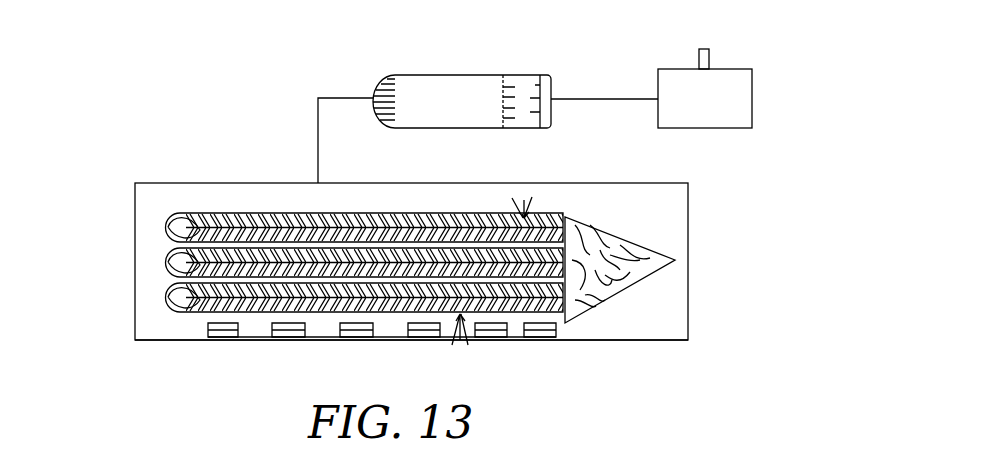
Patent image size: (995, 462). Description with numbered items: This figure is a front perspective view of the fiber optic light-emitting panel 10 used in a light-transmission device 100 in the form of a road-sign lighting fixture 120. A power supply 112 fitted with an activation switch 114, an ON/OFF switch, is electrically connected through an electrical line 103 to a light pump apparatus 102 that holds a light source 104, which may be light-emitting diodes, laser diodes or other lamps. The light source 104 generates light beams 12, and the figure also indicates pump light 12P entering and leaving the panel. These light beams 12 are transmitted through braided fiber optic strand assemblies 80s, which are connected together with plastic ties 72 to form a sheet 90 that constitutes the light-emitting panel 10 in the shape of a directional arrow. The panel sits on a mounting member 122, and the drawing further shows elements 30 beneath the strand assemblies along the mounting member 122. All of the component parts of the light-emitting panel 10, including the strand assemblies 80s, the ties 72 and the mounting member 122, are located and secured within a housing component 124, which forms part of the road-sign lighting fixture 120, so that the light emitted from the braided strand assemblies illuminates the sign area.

The fiber optic light-emitting panel 10 is at (103, 210).
The light beams 12 is at (510, 120).
The pump light 12P is at (392, 80).
The sensors 30 is at (259, 331).
The plastic ties 72 is at (195, 300).
The fiber optic strand assemblies 80s is at (183, 222).
The sheet 90 is at (358, 215).
The light-transmission device 100 is at (113, 331).
The light pump apparatus 102 is at (405, 74).
The electrical line 103 is at (576, 98).
The light source 104 is at (527, 94).
The power supply 112 is at (732, 128).
The activation switch 114 is at (710, 62).
The road-sign lighting fixture 120 is at (678, 221).
The mounting member 122 is at (391, 328).
The housing component 124 is at (612, 349).